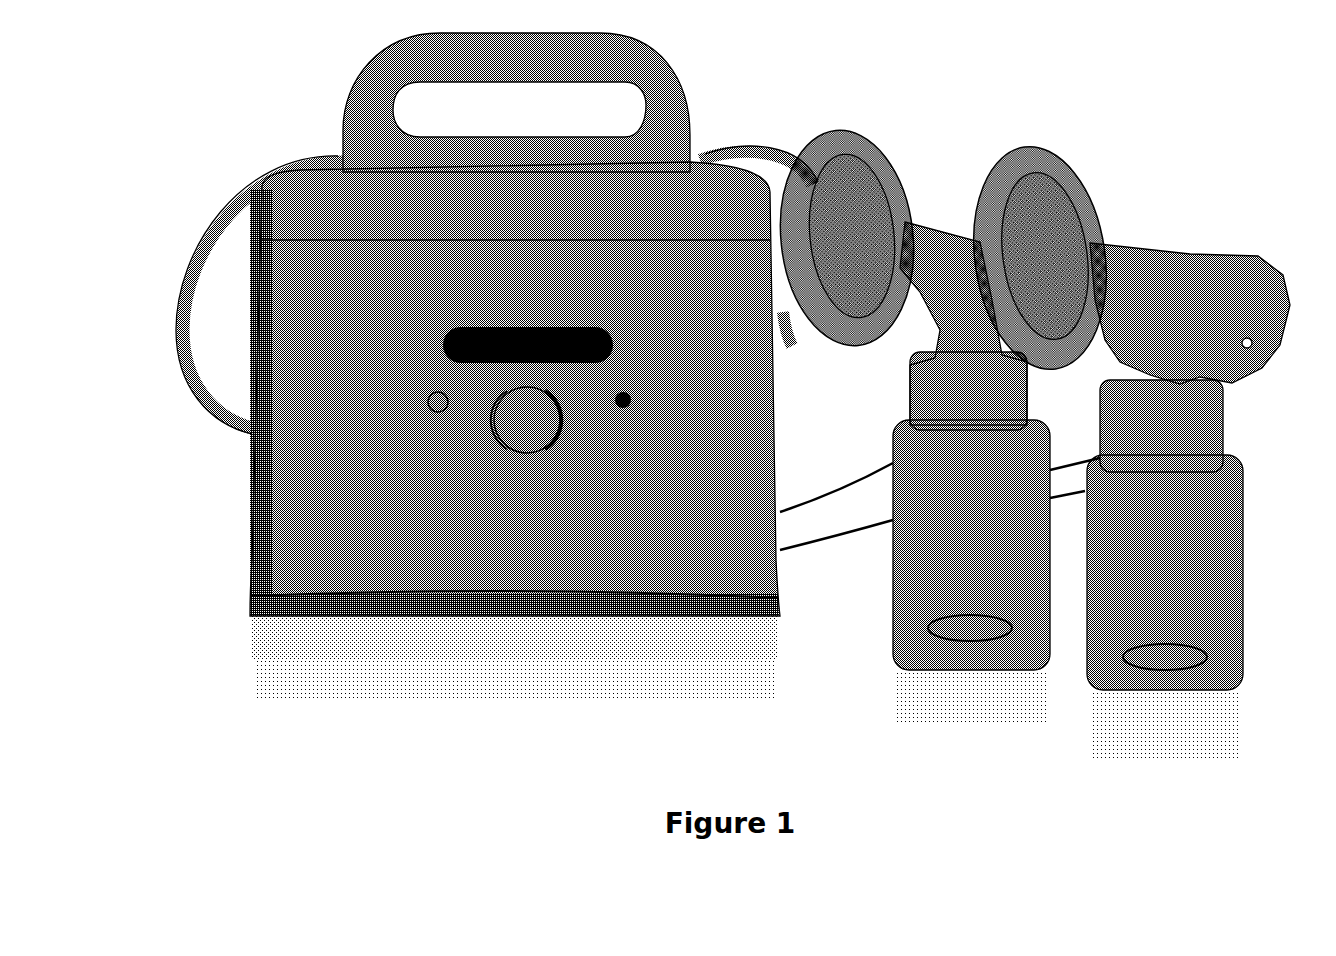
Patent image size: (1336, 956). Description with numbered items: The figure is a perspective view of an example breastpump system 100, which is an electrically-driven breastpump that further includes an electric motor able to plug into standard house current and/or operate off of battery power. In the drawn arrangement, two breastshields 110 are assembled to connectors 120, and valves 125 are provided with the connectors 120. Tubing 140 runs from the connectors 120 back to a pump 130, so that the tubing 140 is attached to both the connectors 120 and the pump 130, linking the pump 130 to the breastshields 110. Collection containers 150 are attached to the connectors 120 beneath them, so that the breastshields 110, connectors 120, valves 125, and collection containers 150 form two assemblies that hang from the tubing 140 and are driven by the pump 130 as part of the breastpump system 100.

The breastpump system 100 is at (742, 396).
The breastshield 110 is at (864, 172).
The connector 120 is at (950, 318).
The valve 125 is at (943, 450).
The pump 130 is at (497, 366).
The tubing 140 is at (840, 488).
The collection container 150 is at (920, 618).